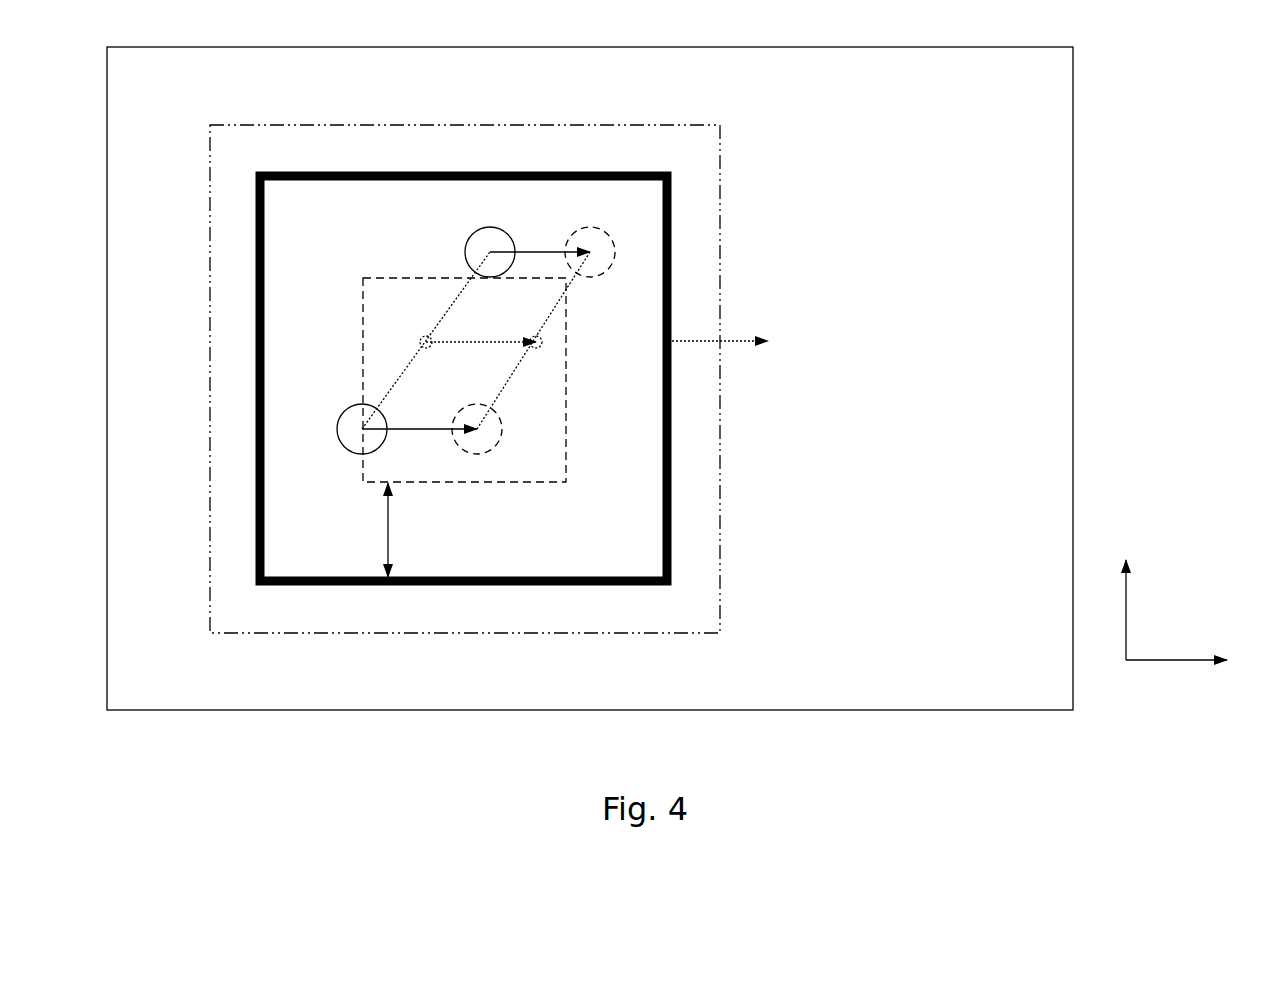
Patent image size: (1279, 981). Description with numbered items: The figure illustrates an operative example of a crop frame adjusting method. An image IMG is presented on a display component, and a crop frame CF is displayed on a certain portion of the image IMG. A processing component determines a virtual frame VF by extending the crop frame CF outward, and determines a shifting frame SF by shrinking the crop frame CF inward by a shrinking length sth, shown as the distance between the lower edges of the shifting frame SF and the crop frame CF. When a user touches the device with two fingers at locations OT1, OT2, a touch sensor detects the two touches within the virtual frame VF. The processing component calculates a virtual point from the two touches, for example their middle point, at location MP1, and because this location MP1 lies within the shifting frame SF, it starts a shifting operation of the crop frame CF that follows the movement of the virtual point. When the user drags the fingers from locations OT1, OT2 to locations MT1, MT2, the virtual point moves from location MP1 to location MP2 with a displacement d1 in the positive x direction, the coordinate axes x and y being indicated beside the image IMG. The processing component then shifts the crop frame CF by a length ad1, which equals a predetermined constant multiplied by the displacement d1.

The image IMG is at (1003, 108).
The virtual frame VF is at (722, 155).
The crop frame CF is at (672, 408).
The shifting frame SF is at (567, 466).
The touch location OT1 is at (527, 240).
The dragged touch location MT1 is at (590, 240).
The touch location OT2 is at (399, 417).
The dragged touch location MT2 is at (477, 417).
The virtual point location MP1 is at (410, 333).
The virtual point location MP2 is at (518, 333).
The displacement d1 is at (481, 355).
The crop frame shift length ad1 is at (728, 354).
The shrinking length sth is at (411, 530).
The x direction x is at (1191, 660).
The y direction y is at (1124, 592).